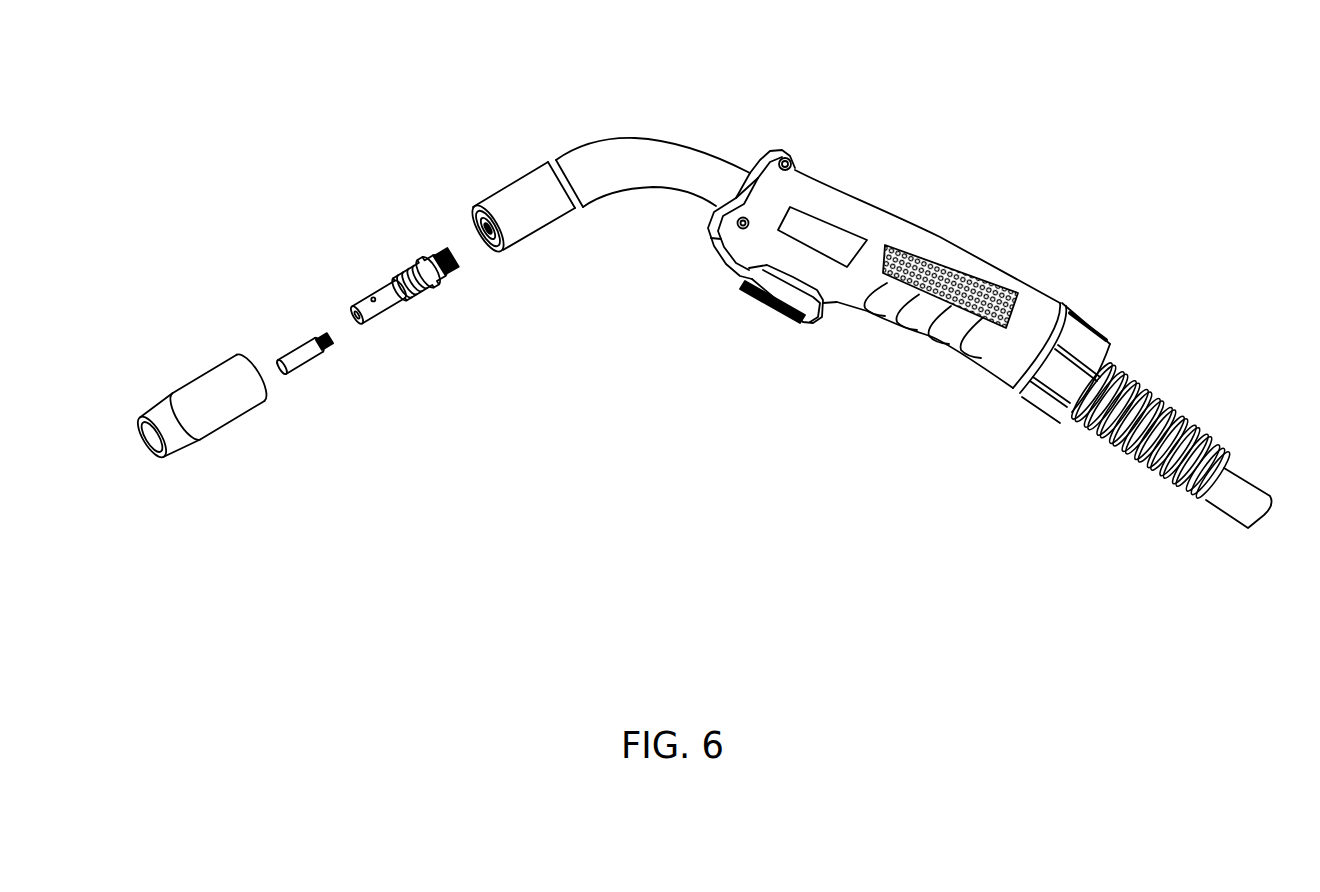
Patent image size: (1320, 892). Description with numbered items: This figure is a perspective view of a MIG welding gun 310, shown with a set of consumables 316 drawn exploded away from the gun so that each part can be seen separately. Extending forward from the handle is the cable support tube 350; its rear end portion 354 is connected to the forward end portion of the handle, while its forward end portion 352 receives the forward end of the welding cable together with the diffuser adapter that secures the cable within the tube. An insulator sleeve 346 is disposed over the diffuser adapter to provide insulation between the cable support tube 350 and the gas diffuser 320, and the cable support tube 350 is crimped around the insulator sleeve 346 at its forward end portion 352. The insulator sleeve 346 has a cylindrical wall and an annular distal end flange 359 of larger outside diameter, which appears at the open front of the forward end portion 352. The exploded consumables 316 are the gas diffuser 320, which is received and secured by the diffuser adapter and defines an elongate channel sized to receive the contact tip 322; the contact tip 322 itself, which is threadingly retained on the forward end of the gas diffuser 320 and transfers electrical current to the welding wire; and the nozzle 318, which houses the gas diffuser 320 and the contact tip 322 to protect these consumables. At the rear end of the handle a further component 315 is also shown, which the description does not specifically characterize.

The MIG welding gun 310 is at (848, 120).
The cable connector 315 is at (1080, 313).
The consumable assembly 316 is at (297, 216).
The nozzle 318 is at (217, 437).
The gas diffuser 320 is at (363, 300).
The contact tip 322 is at (308, 363).
The insulator sleeve 346 is at (497, 247).
The cable support tube 350 is at (549, 162).
The forward end portion 352 is at (493, 195).
The rear end portion 354 is at (670, 140).
The distal end flange 359 is at (482, 253).